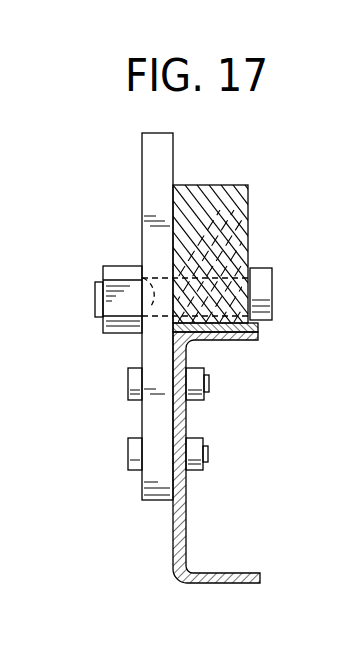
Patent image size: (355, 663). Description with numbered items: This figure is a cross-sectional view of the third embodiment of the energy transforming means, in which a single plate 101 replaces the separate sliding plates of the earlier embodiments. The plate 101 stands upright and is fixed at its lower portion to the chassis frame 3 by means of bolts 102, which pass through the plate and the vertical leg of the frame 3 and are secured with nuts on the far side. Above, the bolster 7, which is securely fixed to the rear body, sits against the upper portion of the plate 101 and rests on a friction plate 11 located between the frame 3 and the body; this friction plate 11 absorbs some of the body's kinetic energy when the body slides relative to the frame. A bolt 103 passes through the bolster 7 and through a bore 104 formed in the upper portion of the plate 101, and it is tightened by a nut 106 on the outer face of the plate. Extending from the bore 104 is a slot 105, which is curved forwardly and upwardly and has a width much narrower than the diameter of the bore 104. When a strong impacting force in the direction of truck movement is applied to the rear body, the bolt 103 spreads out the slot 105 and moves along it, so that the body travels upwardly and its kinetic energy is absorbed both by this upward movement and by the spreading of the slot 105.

The plate 101 is at (158, 202).
The bolster 7 is at (230, 212).
The slot 105 is at (143, 163).
The bore 104 is at (143, 292).
The nut 106 is at (103, 273).
The bolt 103 is at (275, 283).
The friction plate 11 is at (262, 326).
The chassis frame 3 is at (187, 532).
The bolts 102 is at (128, 383).